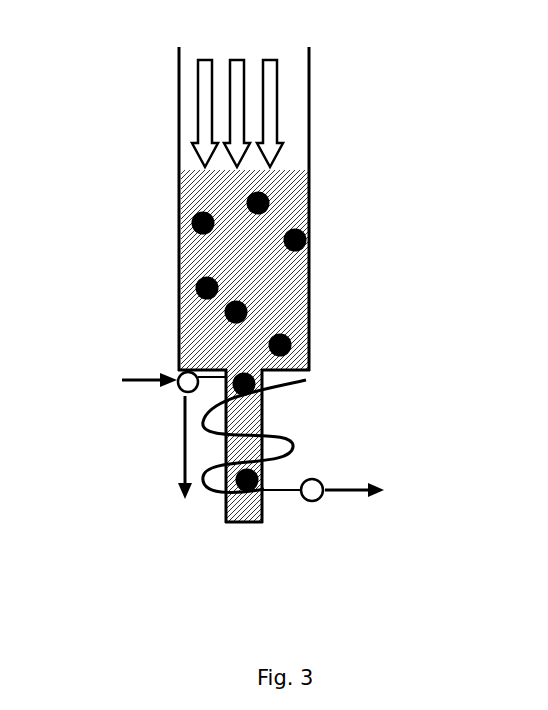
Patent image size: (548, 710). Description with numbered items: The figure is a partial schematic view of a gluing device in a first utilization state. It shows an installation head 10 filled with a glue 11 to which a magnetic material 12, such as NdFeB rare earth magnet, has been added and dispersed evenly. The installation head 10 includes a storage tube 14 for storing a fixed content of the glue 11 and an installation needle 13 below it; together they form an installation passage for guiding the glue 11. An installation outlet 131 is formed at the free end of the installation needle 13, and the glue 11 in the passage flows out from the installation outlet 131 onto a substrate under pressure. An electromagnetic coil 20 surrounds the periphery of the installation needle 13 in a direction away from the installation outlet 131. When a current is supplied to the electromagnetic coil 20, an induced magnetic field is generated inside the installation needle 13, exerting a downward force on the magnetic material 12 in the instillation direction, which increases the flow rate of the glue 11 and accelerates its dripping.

The installation head 10 is at (257, 321).
The glue 11 is at (216, 262).
The magnetic material 12 is at (308, 237).
The installation needle 13 is at (297, 499).
The installation outlet 131 is at (253, 538).
The storage tube 14 is at (322, 149).
The electromagnetic coil 20 is at (304, 386).